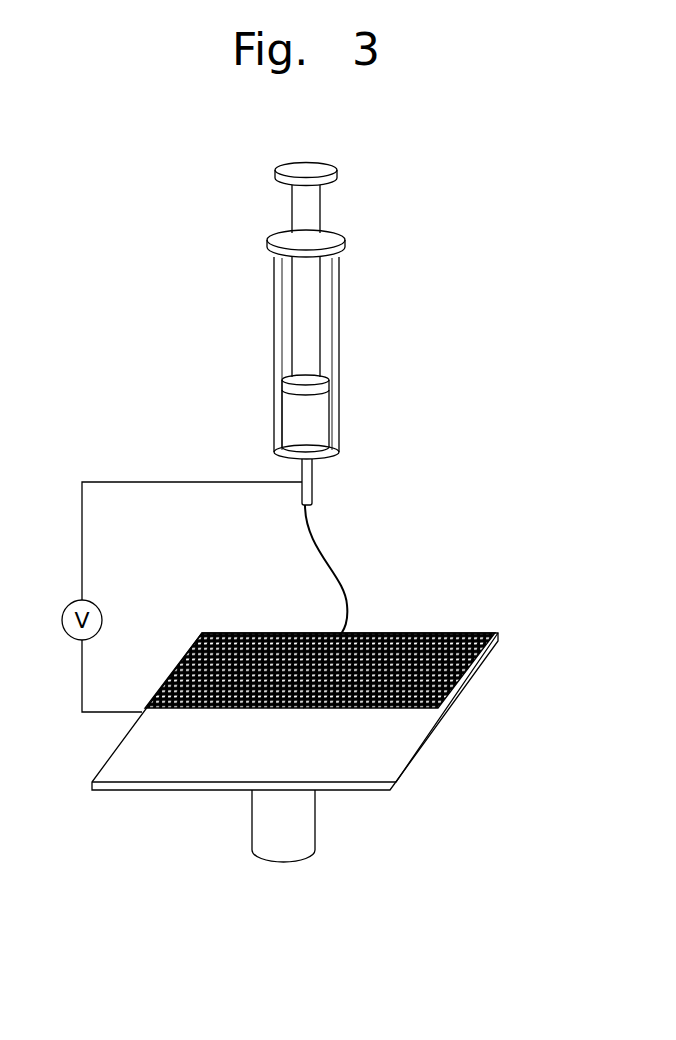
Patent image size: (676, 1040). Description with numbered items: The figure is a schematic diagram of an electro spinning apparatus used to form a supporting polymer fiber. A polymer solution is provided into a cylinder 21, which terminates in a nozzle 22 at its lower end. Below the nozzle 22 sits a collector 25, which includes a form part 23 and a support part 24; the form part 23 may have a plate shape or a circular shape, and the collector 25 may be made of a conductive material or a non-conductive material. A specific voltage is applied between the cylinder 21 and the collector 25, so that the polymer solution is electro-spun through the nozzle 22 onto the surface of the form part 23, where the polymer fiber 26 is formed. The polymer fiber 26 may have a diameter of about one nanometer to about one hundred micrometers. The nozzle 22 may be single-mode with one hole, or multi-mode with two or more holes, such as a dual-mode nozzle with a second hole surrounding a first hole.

The cylinder 21 is at (340, 313).
The nozzle 22 is at (313, 487).
The form part 23 is at (398, 760).
The support part 24 is at (307, 818).
The collector 25 is at (325, 747).
The polymer fiber 26 is at (398, 640).